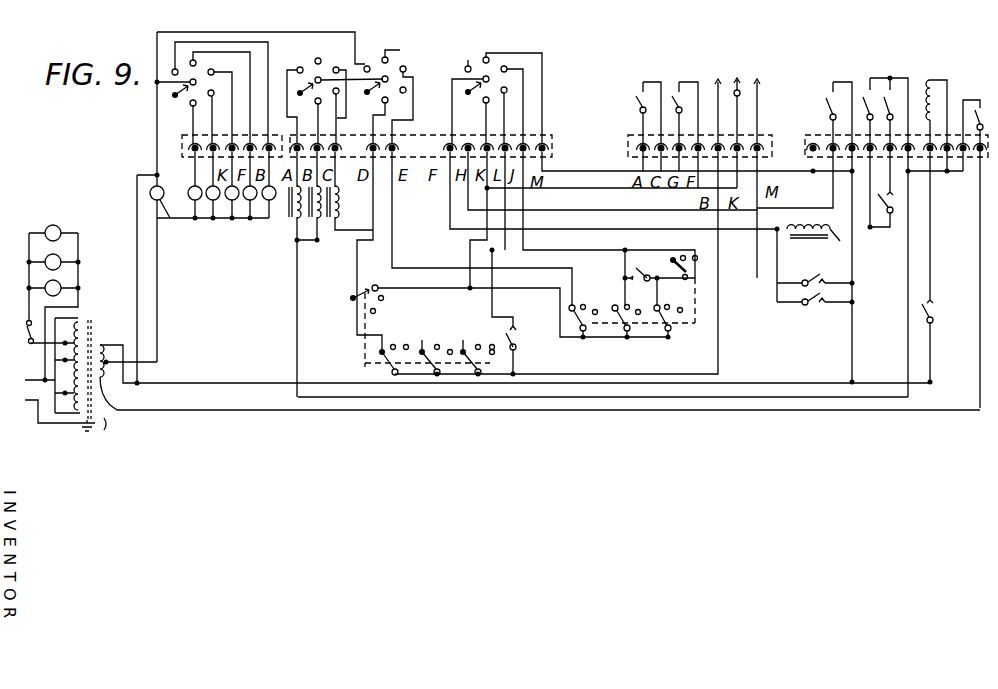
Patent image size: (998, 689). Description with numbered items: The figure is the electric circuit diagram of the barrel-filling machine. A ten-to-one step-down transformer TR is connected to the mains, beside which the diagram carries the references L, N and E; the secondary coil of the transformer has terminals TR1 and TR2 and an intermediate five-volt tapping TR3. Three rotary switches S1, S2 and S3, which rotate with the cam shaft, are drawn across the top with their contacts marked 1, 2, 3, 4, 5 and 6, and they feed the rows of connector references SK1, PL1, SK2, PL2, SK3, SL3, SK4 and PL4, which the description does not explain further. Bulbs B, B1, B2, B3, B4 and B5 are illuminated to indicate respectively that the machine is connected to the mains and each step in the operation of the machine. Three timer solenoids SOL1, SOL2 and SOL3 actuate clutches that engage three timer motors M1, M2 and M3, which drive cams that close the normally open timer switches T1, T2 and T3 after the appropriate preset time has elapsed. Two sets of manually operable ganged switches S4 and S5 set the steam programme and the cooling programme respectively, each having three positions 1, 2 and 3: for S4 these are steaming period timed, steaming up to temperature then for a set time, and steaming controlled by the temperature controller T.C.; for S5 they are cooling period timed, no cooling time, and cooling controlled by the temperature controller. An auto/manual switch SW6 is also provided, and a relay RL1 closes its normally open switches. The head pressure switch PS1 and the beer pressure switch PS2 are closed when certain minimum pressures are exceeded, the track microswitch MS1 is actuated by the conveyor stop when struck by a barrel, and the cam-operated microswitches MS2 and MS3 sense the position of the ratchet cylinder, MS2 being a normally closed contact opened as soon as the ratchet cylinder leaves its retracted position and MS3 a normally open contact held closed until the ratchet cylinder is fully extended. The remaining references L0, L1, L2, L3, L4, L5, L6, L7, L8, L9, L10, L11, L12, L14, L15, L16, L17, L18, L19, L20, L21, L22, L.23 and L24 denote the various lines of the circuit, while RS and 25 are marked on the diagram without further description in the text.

The rotary switch S1 is at (483, 82).
The rotary switch S2 is at (315, 78).
The rotary switch S3 is at (196, 80).
The manually operable ganged switch S4 is at (427, 329).
The manually operable ganged switch S5 is at (628, 320).
The timer switch T1 is at (517, 340).
The timer switch T2 is at (635, 266).
The timer switch T3 is at (814, 310).
The socket SK1 is at (182, 141).
The socket SK2 is at (552, 138).
The socket SK3 is at (628, 140).
The socket SK4 is at (890, 138).
The plug PL1 is at (182, 152).
The plug PL2 is at (570, 155).
The plug PL4 is at (786, 157).
The plug SL3 is at (617, 157).
The timer solenoid SOL1 is at (317, 243).
The timer solenoid SOL2 is at (337, 208).
The timer solenoid SOL3 is at (290, 225).
The bulb B is at (163, 215).
The bulb B1 is at (192, 222).
The bulb B2 is at (210, 222).
The bulb B3 is at (230, 222).
The bulb B4 is at (249, 222).
The bulb B5 is at (267, 222).
The timer motor M1 is at (62, 232).
The timer motor M2 is at (62, 261).
The timer motor M3 is at (62, 287).
The step-down transformer TR is at (87, 390).
The secondary coil terminal TR1 is at (136, 380).
The secondary coil terminal TR2 is at (110, 408).
The intermediate tapping TR3 is at (128, 386).
The relay RL1 is at (808, 263).
The head pressure switch PS1 is at (674, 95).
The beer pressure switch PS2 is at (638, 95).
The track microswitch MS1 is at (829, 92).
The cam operated microswitch MS2 is at (869, 92).
The cam operated microswitch MS3 is at (892, 92).
The resistor RS is at (938, 88).
The auto/manual switch SW6 is at (983, 106).
The temperature controller T.C. is at (758, 80).
The line L.23 is at (785, 92).
The lead 25 is at (757, 250).
The line L0 is at (268, 410).
The line L1 is at (853, 318).
The line L2 is at (823, 207).
The line L3 is at (770, 286).
The line L4 is at (963, 175).
The line L5 is at (932, 347).
The line L6 is at (740, 117).
The line L7 is at (717, 78).
The line L8 is at (597, 191).
The line L9 is at (470, 243).
The line L10 is at (523, 312).
The line L11 is at (535, 372).
The line L12 is at (357, 290).
The line L14 is at (908, 366).
The line L15 is at (560, 253).
The line L16 is at (597, 267).
The line L17 is at (434, 262).
The line L18 is at (297, 318).
The line L19 is at (545, 108).
The line L20 is at (790, 306).
The line L21 is at (137, 215).
The line L22 is at (158, 290).
The line L24 is at (735, 349).
The line terminal L is at (46, 324).
The neutral terminal N is at (29, 371).
The earth terminal E is at (51, 406).
The switch position 1 is at (332, 111).
The switch position 2 is at (205, 98).
The switch position 3 is at (365, 54).
The switch contact 4 is at (190, 62).
The switch contact 5 is at (172, 72).
The switch contact 6 is at (173, 95).